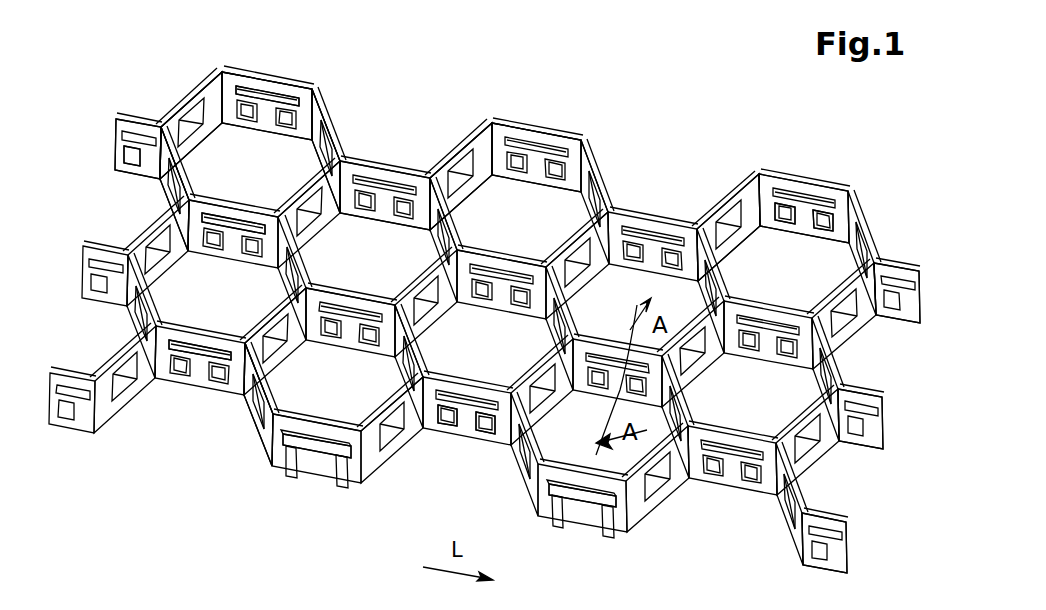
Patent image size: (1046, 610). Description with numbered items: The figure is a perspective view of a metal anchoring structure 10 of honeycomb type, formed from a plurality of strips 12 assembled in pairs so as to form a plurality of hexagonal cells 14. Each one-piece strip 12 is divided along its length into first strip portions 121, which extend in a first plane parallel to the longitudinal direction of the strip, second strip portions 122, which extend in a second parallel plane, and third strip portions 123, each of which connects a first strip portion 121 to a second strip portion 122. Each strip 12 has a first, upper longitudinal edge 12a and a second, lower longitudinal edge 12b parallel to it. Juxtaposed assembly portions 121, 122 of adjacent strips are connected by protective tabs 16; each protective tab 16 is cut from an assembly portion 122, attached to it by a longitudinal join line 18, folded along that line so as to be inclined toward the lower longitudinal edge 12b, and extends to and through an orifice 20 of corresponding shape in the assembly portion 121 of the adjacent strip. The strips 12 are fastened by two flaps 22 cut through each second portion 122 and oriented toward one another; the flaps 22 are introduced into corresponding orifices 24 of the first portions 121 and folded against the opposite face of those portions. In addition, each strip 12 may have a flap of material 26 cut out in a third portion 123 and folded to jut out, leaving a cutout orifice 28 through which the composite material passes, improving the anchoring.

The anchoring structure 10 is at (687, 101).
The strip 12 is at (908, 262).
The first longitudinal edge 12a is at (137, 112).
The second longitudinal edge 12b is at (122, 178).
The cell 14 is at (230, 157).
The first strip portion 121 is at (250, 77).
The second strip portion 122 is at (187, 187).
The third strip portion 123 is at (330, 102).
The protective tab 16 is at (190, 345).
The join line 18 is at (567, 487).
The orifice 20 is at (253, 97).
The flap 22 is at (333, 480).
The orifice 24 is at (823, 227).
The flap of material 26 is at (263, 380).
The cutout orifice 28 is at (243, 410).